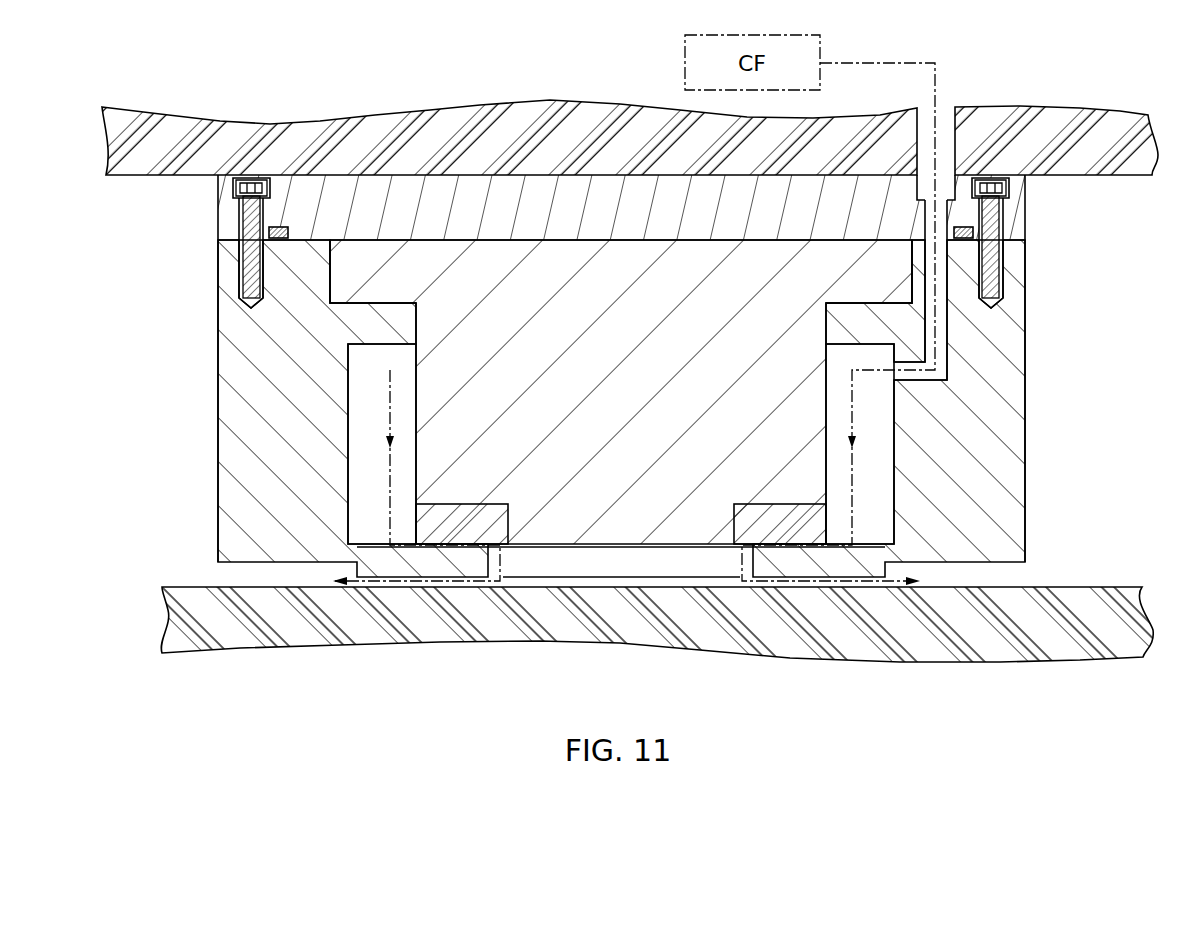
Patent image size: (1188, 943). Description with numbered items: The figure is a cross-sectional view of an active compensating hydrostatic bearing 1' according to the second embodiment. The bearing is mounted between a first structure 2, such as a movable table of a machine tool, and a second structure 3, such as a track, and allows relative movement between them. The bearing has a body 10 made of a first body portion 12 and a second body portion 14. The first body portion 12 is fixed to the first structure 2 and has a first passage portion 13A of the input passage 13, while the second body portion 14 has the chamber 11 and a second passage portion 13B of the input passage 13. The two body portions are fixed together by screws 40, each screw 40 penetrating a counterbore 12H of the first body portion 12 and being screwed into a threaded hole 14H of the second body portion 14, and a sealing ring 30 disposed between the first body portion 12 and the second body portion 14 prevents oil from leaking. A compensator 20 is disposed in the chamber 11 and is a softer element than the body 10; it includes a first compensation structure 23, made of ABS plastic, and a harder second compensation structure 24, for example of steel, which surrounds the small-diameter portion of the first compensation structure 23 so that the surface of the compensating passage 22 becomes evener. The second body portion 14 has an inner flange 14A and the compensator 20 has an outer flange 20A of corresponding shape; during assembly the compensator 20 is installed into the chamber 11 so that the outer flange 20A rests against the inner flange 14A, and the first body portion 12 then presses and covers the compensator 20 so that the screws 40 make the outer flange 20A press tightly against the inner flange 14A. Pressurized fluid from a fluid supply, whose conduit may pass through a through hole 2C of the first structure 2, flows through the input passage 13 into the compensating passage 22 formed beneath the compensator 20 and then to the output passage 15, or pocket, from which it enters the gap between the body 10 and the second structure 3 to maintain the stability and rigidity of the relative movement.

The active compensating hydrostatic bearing 1' is at (612, 385).
The first structure 2 is at (1067, 123).
The through hole 2C is at (942, 123).
The second structure 3 is at (1028, 645).
The body 10 is at (112, 203).
The chamber 11 is at (367, 445).
The first body portion 12 is at (227, 217).
The counterbore 12H is at (1010, 179).
The input passage 13 is at (1110, 205).
The first passage portion 13A is at (938, 212).
The second passage portion 13B is at (938, 258).
The second body portion 14 is at (227, 262).
The inner flange 14A is at (388, 335).
The threaded hole 14H is at (1002, 303).
The output passage 15 is at (552, 565).
The compensator 20 is at (390, 675).
The outer flange 20A is at (370, 263).
The compensating passage 22 is at (773, 533).
The first compensation structure 23 is at (545, 525).
The second compensation structure 24 is at (457, 533).
The sealing ring 30 is at (281, 226).
The screw 40 is at (993, 193).